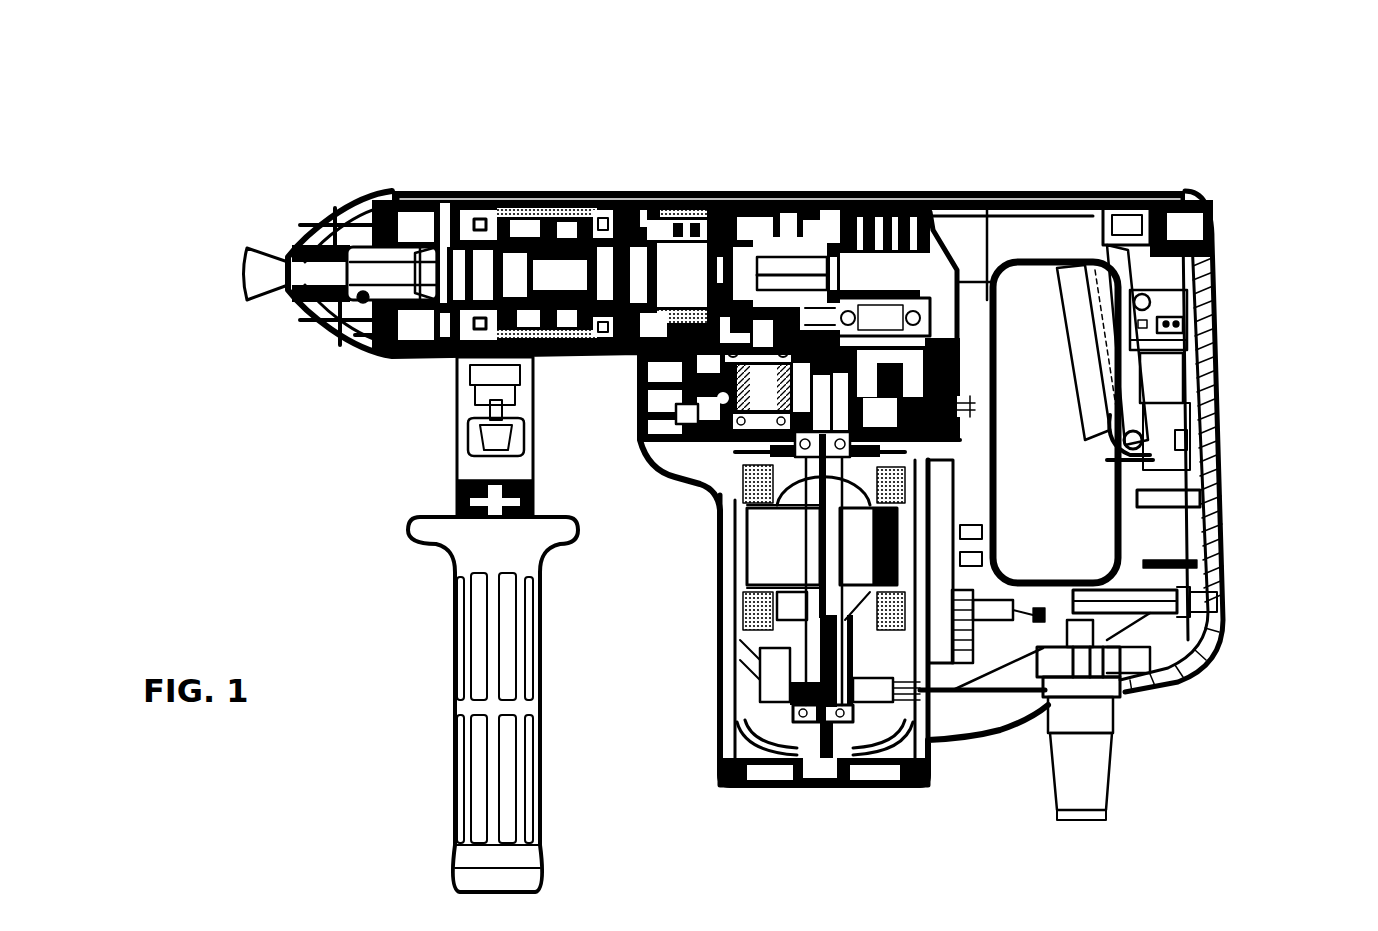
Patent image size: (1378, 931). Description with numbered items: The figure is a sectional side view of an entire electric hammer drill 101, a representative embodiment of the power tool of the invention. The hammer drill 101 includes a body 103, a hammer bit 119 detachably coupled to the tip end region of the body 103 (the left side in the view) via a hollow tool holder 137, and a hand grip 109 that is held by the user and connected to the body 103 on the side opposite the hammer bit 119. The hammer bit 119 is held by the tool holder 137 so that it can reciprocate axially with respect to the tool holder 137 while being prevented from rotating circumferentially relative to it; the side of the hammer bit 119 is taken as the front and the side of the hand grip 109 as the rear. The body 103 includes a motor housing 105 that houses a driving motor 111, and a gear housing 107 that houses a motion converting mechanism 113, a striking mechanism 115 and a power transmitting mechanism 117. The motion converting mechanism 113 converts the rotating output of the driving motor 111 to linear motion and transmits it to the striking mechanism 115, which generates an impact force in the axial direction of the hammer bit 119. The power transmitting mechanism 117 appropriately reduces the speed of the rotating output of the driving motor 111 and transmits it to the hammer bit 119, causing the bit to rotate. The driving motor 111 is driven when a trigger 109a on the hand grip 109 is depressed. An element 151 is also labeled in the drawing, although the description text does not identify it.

The hammer drill 101 is at (1200, 157).
The body 103 is at (985, 196).
The motor housing 105 is at (717, 620).
The gear housing 107 is at (740, 200).
The hand grip 109 is at (1218, 365).
The trigger 109a is at (1063, 355).
The driving motor 111 is at (753, 552).
The motion converting mechanism 113 is at (887, 210).
The striking mechanism 115 is at (607, 200).
The power transmitting mechanism 117 is at (687, 368).
The hammer bit 119 is at (255, 285).
The tool holder 137 is at (430, 308).
The clutch 151 is at (693, 410).